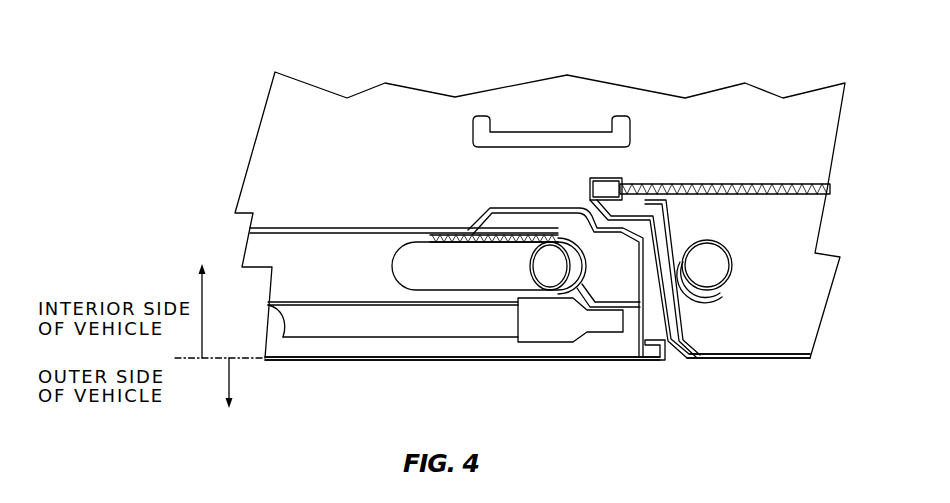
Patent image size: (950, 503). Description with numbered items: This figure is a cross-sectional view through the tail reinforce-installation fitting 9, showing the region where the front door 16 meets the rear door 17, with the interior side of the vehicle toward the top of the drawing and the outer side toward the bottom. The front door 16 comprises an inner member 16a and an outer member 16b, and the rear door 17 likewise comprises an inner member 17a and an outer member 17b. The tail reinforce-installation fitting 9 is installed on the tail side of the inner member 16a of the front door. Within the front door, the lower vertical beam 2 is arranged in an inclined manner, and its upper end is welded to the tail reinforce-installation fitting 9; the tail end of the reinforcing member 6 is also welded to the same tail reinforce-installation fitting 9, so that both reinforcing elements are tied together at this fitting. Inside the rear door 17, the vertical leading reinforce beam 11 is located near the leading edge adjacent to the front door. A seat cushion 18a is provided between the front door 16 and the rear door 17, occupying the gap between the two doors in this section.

The lower vertical beam 2 is at (397, 248).
The reinforcing member 6 is at (457, 333).
The tail reinforce-installation fitting 9 is at (580, 226).
The vertical leading reinforce beam 11 is at (733, 265).
The front door 16 is at (604, 372).
The inner member 16a is at (288, 228).
The outer member 16b is at (320, 358).
The rear door 17 is at (769, 379).
The inner member 17a is at (750, 185).
The outer member 17b is at (747, 358).
The seat cushion 18a is at (473, 127).